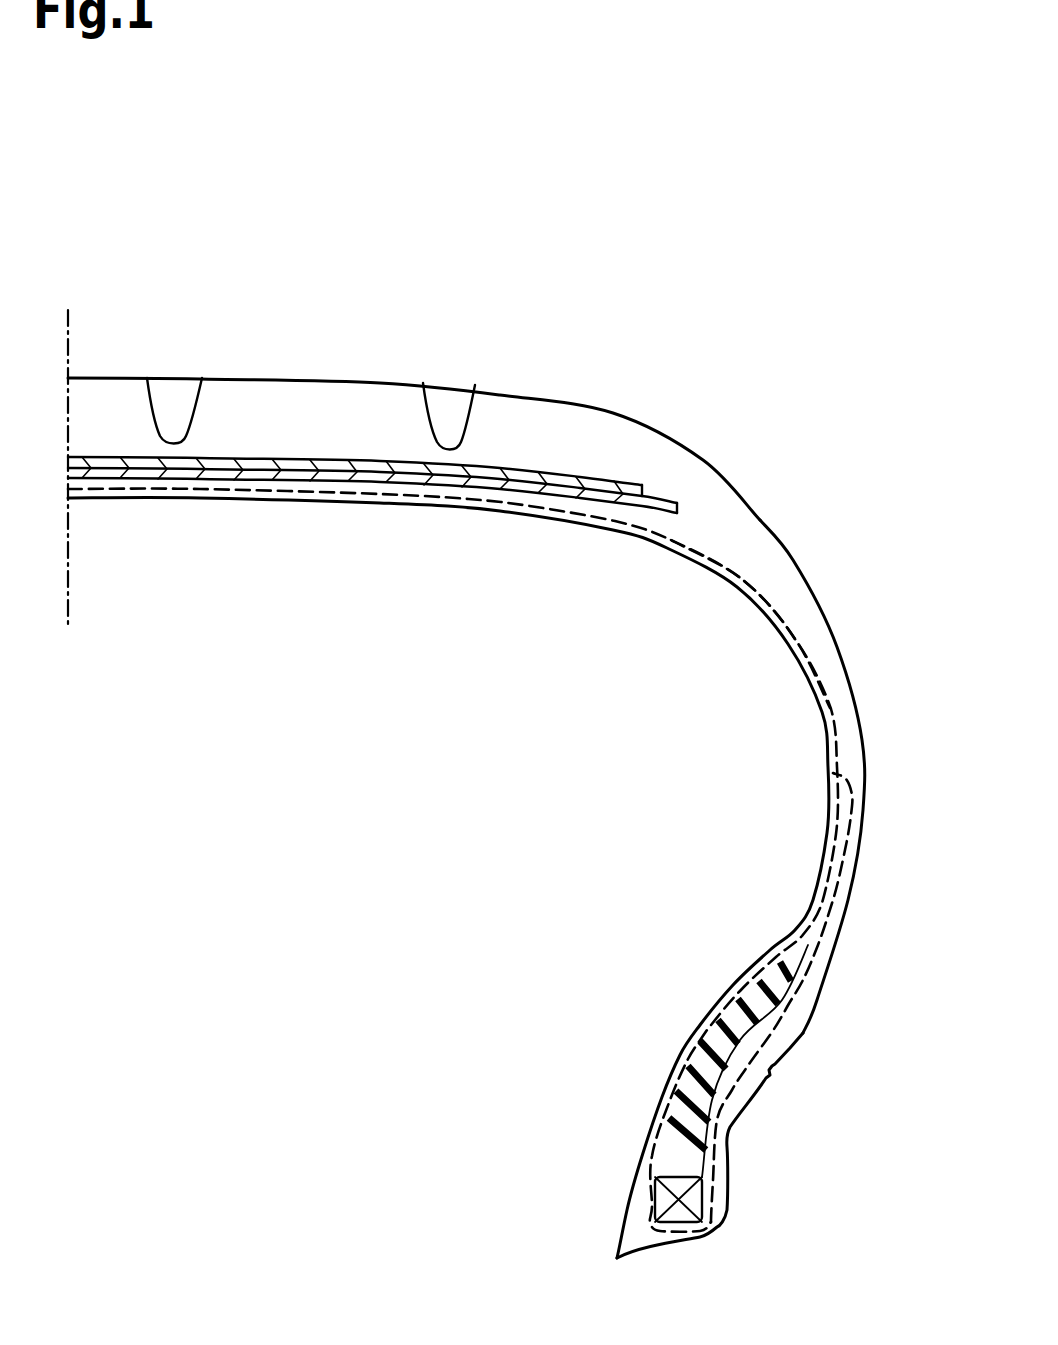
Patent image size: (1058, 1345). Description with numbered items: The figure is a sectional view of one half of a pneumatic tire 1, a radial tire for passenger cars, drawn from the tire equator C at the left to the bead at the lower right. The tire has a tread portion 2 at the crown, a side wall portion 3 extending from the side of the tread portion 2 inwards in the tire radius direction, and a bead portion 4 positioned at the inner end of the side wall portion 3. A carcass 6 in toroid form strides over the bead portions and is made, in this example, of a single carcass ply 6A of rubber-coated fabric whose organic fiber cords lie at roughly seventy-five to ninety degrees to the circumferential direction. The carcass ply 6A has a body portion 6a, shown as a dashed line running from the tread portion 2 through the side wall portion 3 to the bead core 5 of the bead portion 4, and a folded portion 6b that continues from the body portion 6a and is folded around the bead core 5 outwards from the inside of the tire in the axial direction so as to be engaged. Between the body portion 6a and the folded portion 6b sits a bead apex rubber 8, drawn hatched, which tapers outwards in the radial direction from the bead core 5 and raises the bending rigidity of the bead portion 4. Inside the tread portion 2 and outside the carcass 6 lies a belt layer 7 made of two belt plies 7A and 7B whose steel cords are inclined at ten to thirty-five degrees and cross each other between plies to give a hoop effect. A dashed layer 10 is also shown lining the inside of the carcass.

The pneumatic tire 1 is at (657, 393).
The tread portion 2 is at (270, 378).
The side wall portion 3 is at (865, 705).
The bead portion 4 is at (630, 1100).
The bead core 5 is at (660, 1200).
The carcass 6 is at (460, 860).
The carcass ply 6A is at (460, 860).
The body portion 6a is at (830, 727).
The folded portion 6b is at (833, 773).
The belt layer 7 is at (372, 586).
The belt ply 7A is at (328, 475).
The belt ply 7B is at (222, 462).
The bead apex rubber 8 is at (716, 1055).
The inner liner 10 is at (783, 598).
The tire equator line C is at (65, 450).